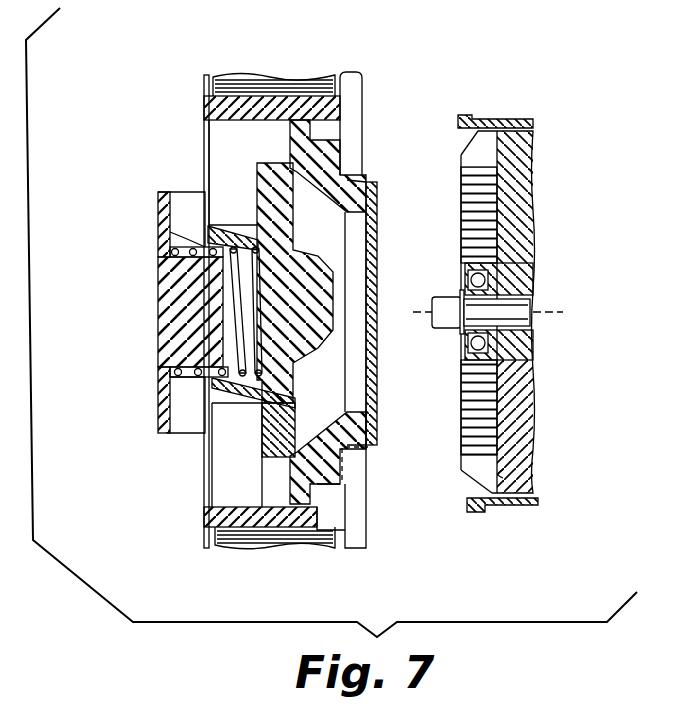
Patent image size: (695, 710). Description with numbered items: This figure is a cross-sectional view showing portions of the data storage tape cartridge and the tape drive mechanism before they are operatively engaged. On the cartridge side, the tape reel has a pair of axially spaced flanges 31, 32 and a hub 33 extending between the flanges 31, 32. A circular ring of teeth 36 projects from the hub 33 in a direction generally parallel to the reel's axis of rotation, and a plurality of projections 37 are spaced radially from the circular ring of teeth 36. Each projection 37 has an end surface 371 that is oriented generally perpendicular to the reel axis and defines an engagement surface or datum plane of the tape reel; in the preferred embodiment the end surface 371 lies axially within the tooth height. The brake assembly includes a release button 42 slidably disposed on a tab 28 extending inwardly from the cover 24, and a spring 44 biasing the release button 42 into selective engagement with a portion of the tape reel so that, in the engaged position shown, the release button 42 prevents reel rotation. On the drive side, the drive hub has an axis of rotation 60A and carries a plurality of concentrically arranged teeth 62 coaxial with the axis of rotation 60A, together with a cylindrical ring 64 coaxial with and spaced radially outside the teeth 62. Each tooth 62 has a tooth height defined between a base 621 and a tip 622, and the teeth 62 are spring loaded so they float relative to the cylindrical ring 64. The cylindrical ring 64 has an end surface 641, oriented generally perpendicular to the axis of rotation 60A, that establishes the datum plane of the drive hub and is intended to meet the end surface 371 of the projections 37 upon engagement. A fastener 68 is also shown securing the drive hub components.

The cover 24 is at (163, 410).
The tab 28 is at (167, 313).
The flange 31 is at (337, 77).
The flange 32 is at (207, 80).
The hub 33 is at (220, 515).
The circular ring of teeth 36 is at (354, 152).
The projections 37 is at (347, 497).
The end surface 371 is at (353, 503).
The release button 42 is at (272, 432).
The spring 44 is at (163, 232).
The axis of rotation 60A is at (548, 315).
The teeth 62 is at (472, 157).
The base 621 is at (500, 480).
The tip 622 is at (470, 473).
The cylindrical ring 64 is at (510, 512).
The end surface 641 is at (455, 118).
The bolt 68 is at (530, 300).